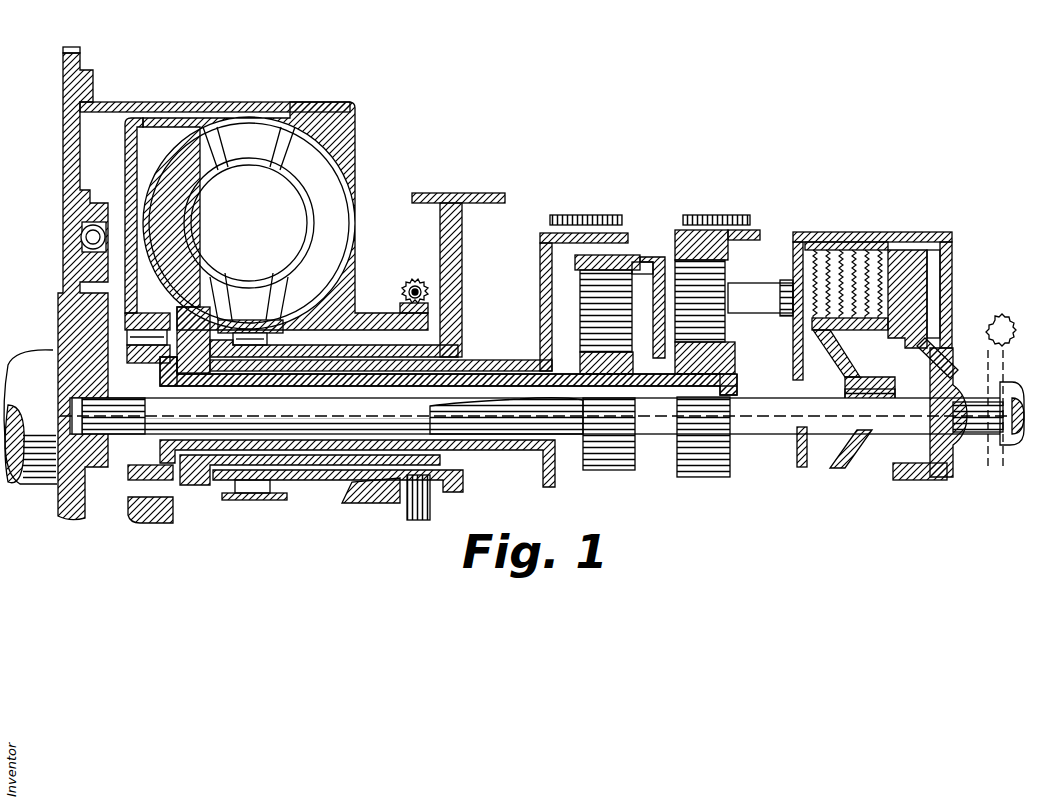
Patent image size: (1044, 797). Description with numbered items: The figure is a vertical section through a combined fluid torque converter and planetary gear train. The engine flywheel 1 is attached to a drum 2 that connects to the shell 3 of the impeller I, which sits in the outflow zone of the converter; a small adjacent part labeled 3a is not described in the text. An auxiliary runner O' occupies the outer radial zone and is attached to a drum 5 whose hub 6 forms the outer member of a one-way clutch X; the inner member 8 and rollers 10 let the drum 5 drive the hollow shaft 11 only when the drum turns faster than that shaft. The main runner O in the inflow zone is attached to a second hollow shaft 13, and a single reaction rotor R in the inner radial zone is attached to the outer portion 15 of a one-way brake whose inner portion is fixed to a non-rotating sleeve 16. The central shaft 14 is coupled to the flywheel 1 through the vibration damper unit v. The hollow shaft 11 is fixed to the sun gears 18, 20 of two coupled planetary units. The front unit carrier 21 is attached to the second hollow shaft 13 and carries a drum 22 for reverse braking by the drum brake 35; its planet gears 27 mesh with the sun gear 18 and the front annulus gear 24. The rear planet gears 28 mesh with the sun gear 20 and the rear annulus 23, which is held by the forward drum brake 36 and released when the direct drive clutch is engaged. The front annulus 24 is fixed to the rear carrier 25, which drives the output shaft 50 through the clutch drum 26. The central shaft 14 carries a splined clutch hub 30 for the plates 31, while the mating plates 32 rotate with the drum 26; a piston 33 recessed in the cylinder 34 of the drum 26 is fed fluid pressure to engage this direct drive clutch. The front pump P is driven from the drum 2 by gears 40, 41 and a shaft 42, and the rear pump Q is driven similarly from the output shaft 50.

The engine flywheel 1 is at (63, 128).
The drum 2 is at (133, 103).
The shell of the impeller 3 is at (343, 163).
The drum 5 is at (125, 150).
The hub 6 is at (150, 313).
The inner member 8 is at (138, 352).
The rollers 10 is at (140, 336).
The hollow shaft 11 is at (560, 434).
The second hollow shaft 13 is at (470, 360).
The central shaft 14 is at (520, 398).
The outer portion of the one-way brake unit 15 is at (245, 320).
The non-rotating sleeve 16 is at (310, 480).
The sun gear 18 is at (615, 460).
The sun gear 20 is at (255, 498).
The carrier of the front planetary unit 21 is at (540, 290).
The drum for reverse braking 22 is at (540, 238).
The rear unit annulus 23 is at (740, 258).
The front unit annulus gear 24 is at (640, 266).
The rear unit carrier 25 is at (658, 275).
The clutch drum 26 is at (820, 232).
The front unit planet gears 27 is at (592, 296).
The rear unit planet gears 28 is at (730, 276).
The splined clutch hub 30 is at (818, 330).
The plates 31 is at (860, 330).
The mating plates 32 is at (870, 250).
The piston 33 is at (916, 278).
The cylinder 34 is at (930, 248).
The drum brake 35 is at (590, 215).
The drum brake 36 is at (717, 215).
The output shaft 50 is at (964, 426).
The bracket 3a is at (372, 497).
The main runner O is at (197, 214).
The auxiliary runner O' is at (249, 194).
The impeller I is at (325, 225).
The reaction rotor R is at (243, 296).
The front pump P is at (410, 288).
The rear pump Q is at (1000, 318).
The vibration damper unit v is at (82, 237).
The one-way clutch X is at (160, 488).
The gear 40 is at (400, 313).
The gear 41 is at (406, 297).
The shaft 42 is at (417, 288).